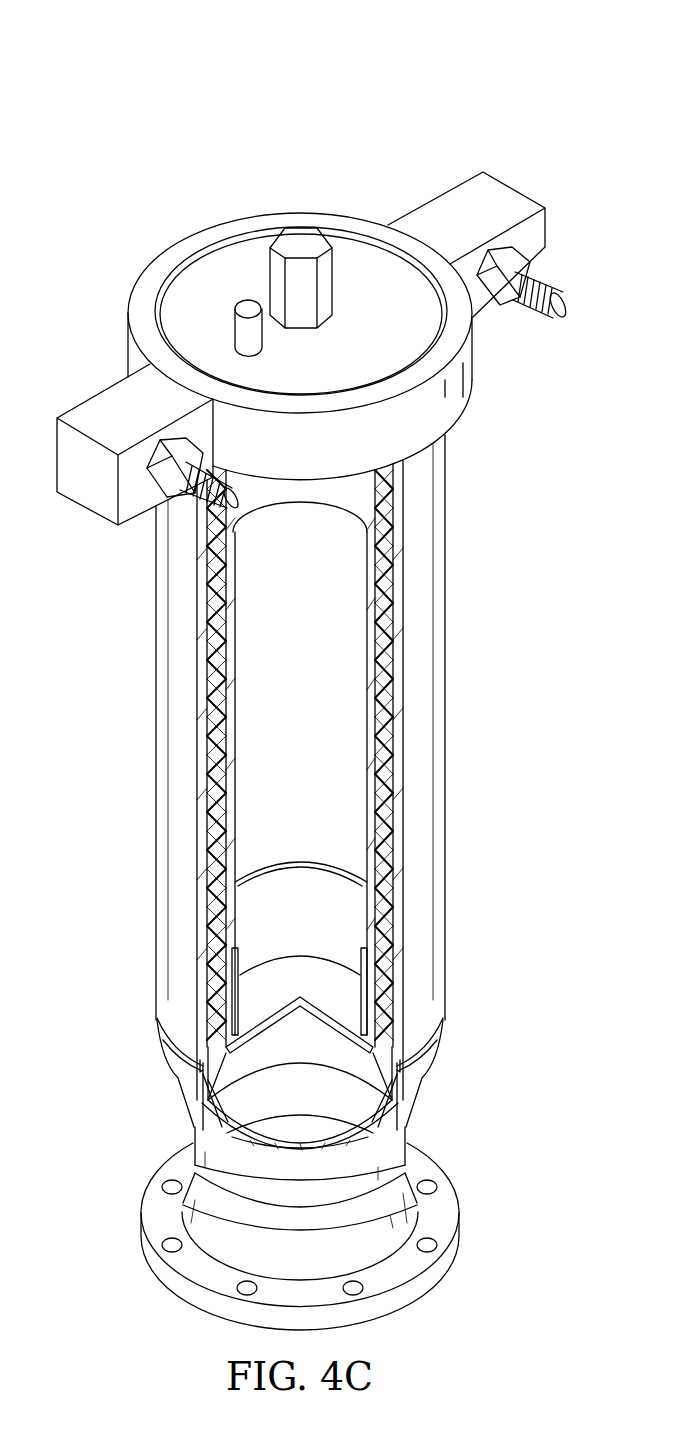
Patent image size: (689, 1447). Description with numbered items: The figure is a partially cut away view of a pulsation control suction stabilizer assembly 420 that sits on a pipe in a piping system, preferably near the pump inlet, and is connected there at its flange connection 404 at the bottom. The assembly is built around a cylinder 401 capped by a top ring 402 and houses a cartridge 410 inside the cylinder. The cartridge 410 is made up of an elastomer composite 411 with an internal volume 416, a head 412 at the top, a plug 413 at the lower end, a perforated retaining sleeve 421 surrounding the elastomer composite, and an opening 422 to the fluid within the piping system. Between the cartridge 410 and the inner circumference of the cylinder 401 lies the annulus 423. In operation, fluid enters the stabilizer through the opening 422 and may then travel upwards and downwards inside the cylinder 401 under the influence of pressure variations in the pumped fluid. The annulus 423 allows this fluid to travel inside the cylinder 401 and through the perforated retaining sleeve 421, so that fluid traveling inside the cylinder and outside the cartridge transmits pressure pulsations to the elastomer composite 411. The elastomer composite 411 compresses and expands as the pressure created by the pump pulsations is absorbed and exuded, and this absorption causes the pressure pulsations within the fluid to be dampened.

The pulsation control suction stabilizer assembly 420 is at (157, 88).
The top ring 402 is at (473, 345).
The cartridge 410 is at (212, 275).
The head 412 is at (347, 253).
The cylinder 401 is at (156, 614).
The perforated retaining sleeve 421 is at (375, 525).
The elastomer composite 411 is at (229, 671).
The internal volume 416 is at (322, 723).
The annulus 423 is at (168, 937).
The plug 413 is at (257, 1015).
The opening 422 is at (373, 1110).
The flange connection 404 is at (141, 1230).